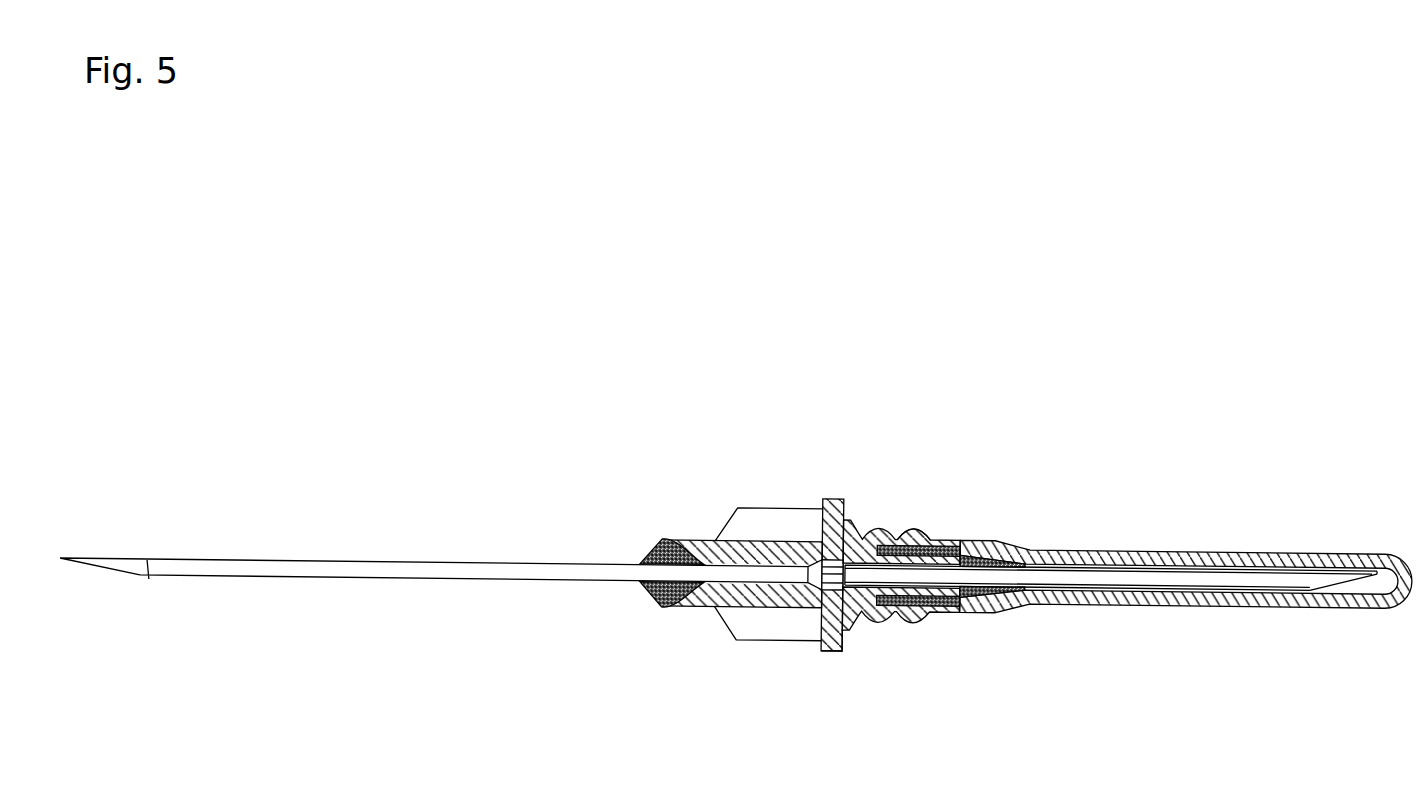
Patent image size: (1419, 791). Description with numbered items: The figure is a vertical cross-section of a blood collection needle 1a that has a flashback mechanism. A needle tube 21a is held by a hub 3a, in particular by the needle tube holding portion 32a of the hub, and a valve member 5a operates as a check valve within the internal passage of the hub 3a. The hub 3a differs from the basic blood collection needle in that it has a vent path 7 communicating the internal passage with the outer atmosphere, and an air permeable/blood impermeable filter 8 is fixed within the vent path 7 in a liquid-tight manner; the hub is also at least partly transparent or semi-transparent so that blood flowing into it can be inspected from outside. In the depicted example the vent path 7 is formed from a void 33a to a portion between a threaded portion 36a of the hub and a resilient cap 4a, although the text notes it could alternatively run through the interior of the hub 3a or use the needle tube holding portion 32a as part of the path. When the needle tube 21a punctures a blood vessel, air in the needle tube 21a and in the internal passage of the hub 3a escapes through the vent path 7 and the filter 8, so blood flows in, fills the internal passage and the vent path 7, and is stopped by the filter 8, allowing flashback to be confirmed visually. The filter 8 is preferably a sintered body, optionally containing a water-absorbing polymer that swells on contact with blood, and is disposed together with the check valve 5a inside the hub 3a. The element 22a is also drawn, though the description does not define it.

The blood collection needle 1a is at (707, 479).
The needle tube 21a is at (333, 558).
The hub 3a is at (832, 497).
The valve member 5a is at (813, 583).
The void 33a is at (838, 648).
The needle tube holding portion 32a is at (898, 592).
The threaded portion 36a is at (915, 525).
The vent path 7 is at (876, 545).
The air permeable/blood impermeable filter 8 is at (960, 538).
The resilient cap 4a is at (1197, 557).
The inner tube 22a is at (1225, 588).